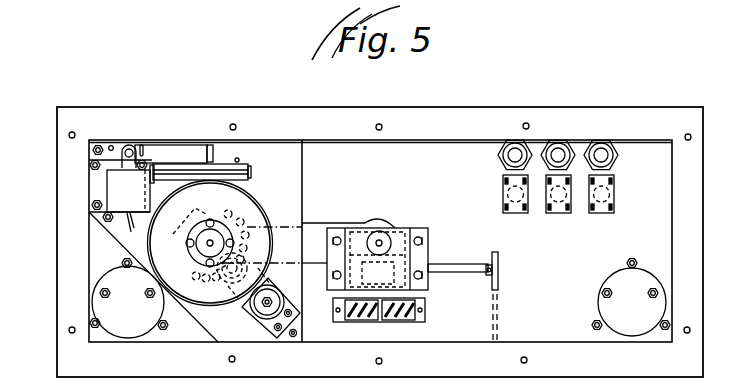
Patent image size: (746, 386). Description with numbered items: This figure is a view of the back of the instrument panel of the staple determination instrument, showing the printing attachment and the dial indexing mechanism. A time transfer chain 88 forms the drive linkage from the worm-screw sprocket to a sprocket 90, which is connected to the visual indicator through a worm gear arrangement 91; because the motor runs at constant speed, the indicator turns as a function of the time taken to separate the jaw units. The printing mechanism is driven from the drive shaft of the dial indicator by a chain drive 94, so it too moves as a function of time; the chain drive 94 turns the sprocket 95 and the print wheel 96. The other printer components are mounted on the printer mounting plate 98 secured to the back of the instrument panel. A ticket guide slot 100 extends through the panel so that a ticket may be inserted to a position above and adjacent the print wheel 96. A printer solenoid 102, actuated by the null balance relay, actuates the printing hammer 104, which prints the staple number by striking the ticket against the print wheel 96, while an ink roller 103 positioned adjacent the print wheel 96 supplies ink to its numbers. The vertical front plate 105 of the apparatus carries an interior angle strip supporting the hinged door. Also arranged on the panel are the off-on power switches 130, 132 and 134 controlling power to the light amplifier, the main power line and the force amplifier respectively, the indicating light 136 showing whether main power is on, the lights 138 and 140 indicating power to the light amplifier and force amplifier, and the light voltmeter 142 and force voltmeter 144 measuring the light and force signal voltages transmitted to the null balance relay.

The time transfer chain 88 is at (497, 313).
The sprocket 90 is at (499, 270).
The worm gear arrangement 91 is at (390, 262).
The chain drive 94 is at (310, 223).
The sprocket 95 is at (222, 224).
The print wheel 96 is at (250, 196).
The printer mounting plate 98 is at (306, 150).
The ticket guide slot 100 is at (251, 163).
The printer solenoid 102 is at (107, 180).
The ink roller 103 is at (256, 318).
The printing hammer 104 is at (185, 141).
The vertical front plate 105 is at (256, 306).
The power switch 130 is at (594, 213).
The power switch 132 is at (548, 213).
The power switch 134 is at (504, 212).
The indicating light 136 is at (558, 140).
The indicating light 138 is at (604, 140).
The indicating light 140 is at (513, 140).
The light voltmeter 142 is at (612, 285).
The force voltmeter 144 is at (106, 303).